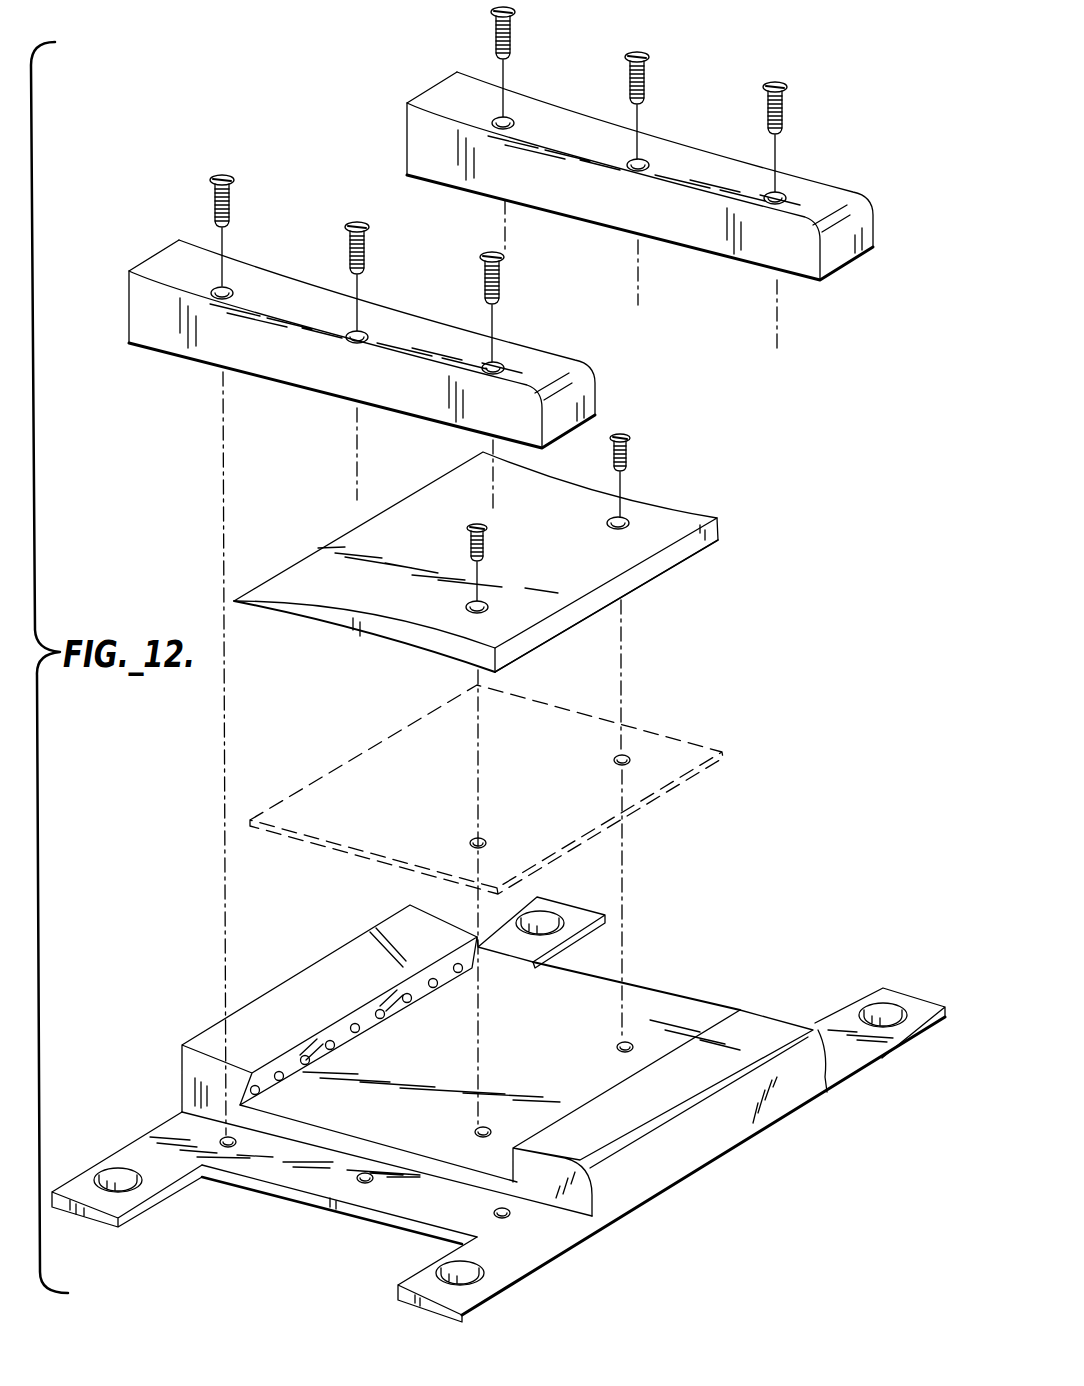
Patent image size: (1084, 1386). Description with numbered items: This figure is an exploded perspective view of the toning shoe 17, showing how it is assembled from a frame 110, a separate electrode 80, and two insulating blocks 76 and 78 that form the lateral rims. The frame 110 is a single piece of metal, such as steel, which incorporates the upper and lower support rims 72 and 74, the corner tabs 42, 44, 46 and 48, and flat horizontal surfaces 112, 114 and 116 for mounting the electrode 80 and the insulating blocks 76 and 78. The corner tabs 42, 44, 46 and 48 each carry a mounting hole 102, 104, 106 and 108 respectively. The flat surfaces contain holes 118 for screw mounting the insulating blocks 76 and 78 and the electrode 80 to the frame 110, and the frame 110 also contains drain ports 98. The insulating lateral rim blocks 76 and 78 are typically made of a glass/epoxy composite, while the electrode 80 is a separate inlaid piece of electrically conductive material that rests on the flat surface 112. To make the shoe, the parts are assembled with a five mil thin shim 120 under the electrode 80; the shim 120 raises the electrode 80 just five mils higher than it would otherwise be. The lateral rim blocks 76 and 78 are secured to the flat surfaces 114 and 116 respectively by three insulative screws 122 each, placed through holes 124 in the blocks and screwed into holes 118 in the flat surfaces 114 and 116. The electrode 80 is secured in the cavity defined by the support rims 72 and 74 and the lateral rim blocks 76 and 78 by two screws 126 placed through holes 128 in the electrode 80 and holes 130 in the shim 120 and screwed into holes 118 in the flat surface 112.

The assembly 17 is at (208, 83).
The corner tab 42 is at (557, 900).
The corner tab 44 is at (858, 1005).
The corner tab 46 is at (127, 1153).
The corner tab 48 is at (457, 1247).
The upper support rim 72 is at (757, 1020).
The lower support rim 74 is at (318, 978).
The insulating block 76 is at (442, 97).
The insulating block 78 is at (158, 263).
The electrode 80 is at (335, 547).
The drain ports 98 is at (310, 1063).
The mounting hole 102 is at (553, 930).
The mounting hole 104 is at (893, 1023).
The mounting hole 106 is at (125, 1188).
The mounting hole 108 is at (477, 1270).
The frame 110 is at (498, 1094).
The flat horizontal surface 112 is at (453, 1000).
The flat horizontal surface 114 is at (640, 992).
The flat horizontal surface 116 is at (280, 1165).
The holes 118 is at (622, 1046).
The shim 120 is at (690, 738).
The insulative screws 122 is at (780, 87).
The holes 124 is at (627, 160).
The screws 126 is at (468, 528).
The holes 128 is at (612, 527).
The holes 130 is at (618, 760).